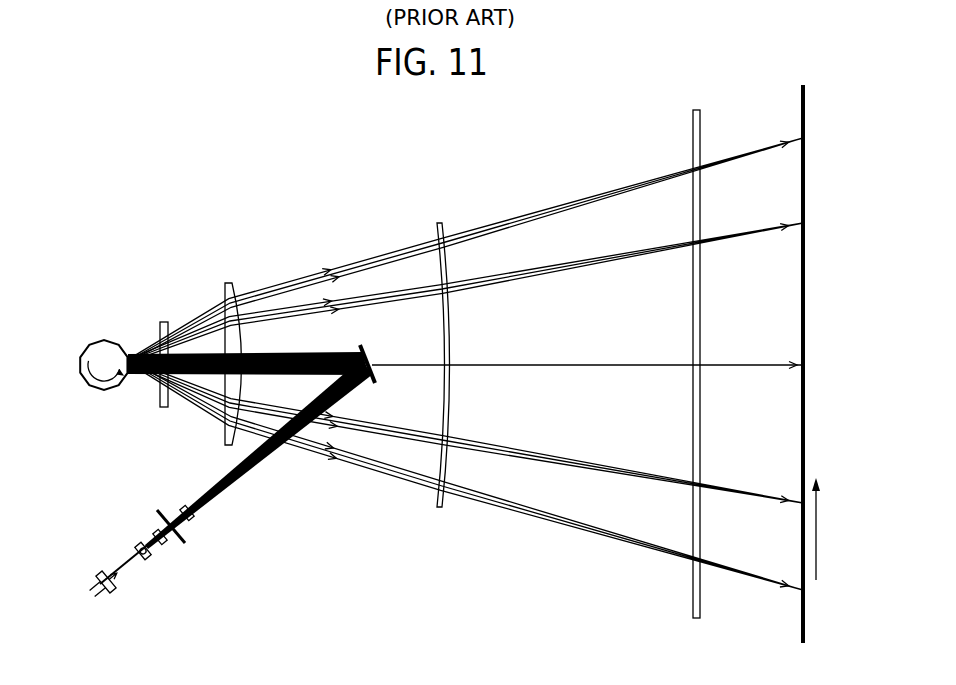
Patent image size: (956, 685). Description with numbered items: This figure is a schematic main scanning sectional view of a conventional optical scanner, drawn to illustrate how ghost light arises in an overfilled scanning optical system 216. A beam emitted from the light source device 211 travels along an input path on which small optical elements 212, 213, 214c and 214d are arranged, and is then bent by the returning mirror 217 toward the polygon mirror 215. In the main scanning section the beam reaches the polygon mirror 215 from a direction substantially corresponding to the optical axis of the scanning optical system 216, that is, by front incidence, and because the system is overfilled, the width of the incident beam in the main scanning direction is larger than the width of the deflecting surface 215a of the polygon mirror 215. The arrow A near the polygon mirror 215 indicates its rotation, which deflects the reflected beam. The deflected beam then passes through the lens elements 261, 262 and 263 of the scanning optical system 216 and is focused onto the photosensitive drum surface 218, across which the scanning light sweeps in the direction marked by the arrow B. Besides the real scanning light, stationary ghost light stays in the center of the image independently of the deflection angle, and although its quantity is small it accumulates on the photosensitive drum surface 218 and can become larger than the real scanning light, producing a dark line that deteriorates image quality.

The light source device 211 is at (108, 576).
The half-wave plate / mirror 212 is at (182, 546).
The collimator lens 213 is at (138, 548).
The cylindrical lens 214c is at (153, 528).
The cylindrical lens 214d is at (191, 519).
The polygon mirror 215 is at (90, 348).
The deflecting surface 215a is at (128, 380).
The scanning optical system 216 is at (421, 158).
The returning mirror 217 is at (370, 346).
The photosensitive drum surface 218 is at (800, 99).
The first scanning lens (plate) 261 is at (163, 322).
The second scanning lens 262 is at (229, 285).
The third scanning lens 263 is at (437, 224).
The rotation direction of polygon mirror A is at (90, 387).
The scanning direction B is at (819, 543).